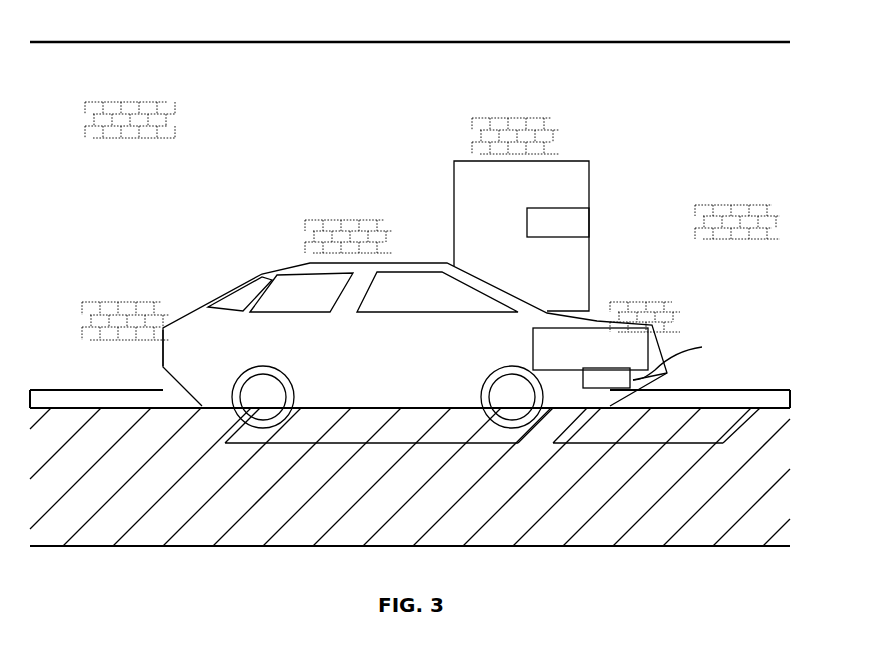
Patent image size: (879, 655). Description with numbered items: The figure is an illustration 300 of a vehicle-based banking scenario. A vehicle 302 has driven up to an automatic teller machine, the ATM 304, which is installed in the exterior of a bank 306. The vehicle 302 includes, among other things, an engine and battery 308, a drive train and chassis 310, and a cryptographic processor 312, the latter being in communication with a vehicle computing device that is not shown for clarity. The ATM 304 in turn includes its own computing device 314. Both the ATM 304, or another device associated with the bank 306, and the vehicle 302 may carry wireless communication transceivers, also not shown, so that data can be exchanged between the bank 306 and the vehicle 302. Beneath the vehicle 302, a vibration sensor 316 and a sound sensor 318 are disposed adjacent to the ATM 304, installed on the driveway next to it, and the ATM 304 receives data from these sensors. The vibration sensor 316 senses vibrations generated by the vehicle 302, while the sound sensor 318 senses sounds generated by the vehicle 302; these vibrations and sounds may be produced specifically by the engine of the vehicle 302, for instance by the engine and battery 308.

The illustration 300 is at (695, 41).
The vehicle 302 is at (243, 280).
The automatic teller machine (ATM) 304 is at (521, 236).
The bank 306 is at (425, 196).
The engine and battery 308 is at (598, 326).
The drive train and chassis 310 is at (165, 365).
The cryptographic processor 312 is at (697, 357).
The computing device 314 is at (558, 222).
The vibration sensor 316 is at (389, 425).
The sound sensor 318 is at (640, 444).